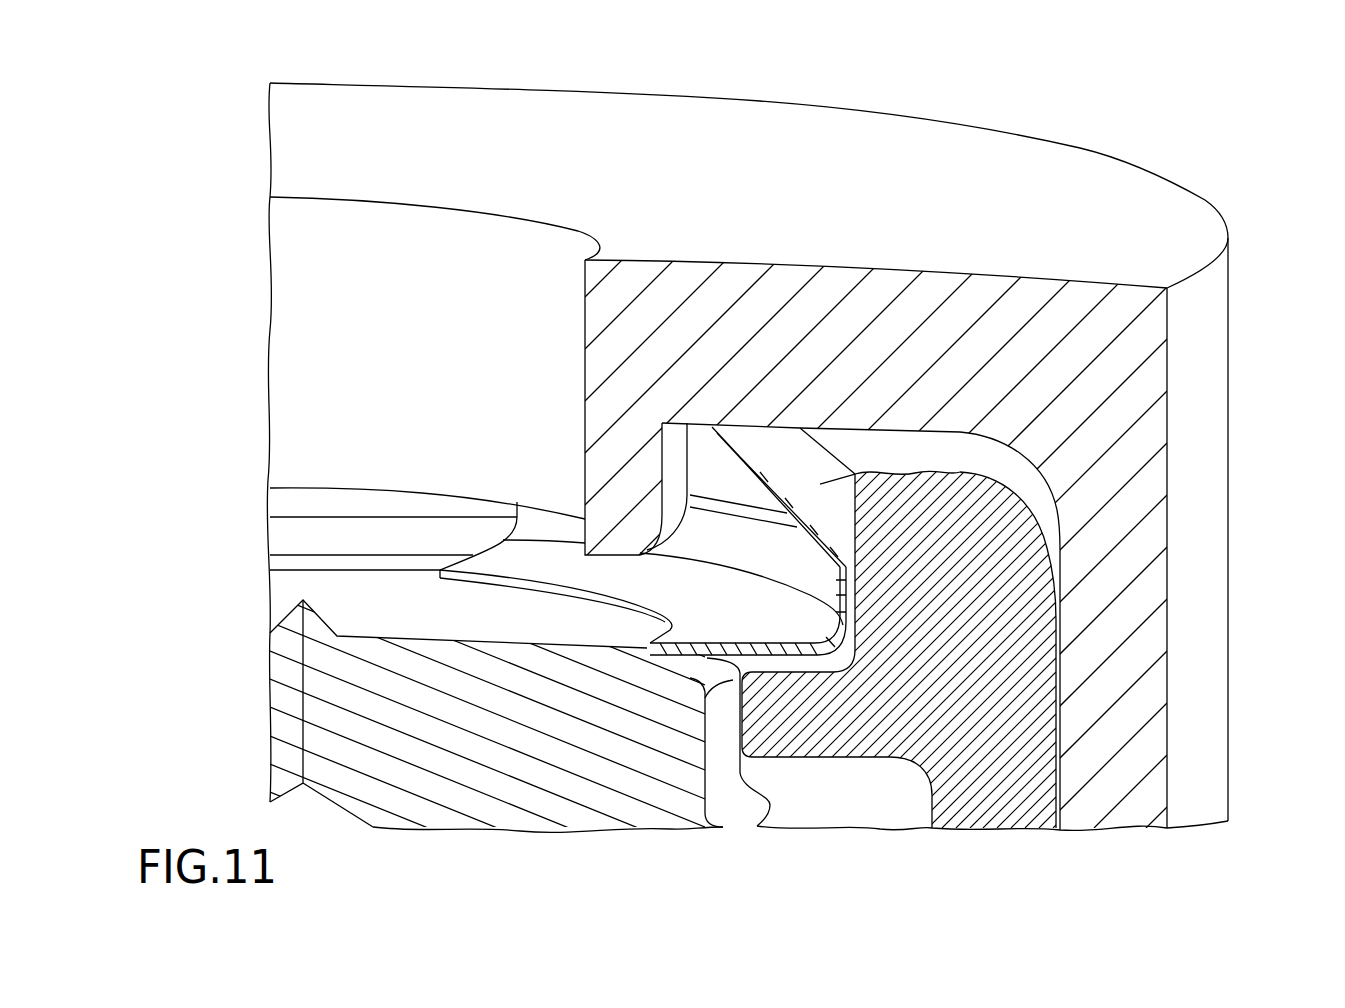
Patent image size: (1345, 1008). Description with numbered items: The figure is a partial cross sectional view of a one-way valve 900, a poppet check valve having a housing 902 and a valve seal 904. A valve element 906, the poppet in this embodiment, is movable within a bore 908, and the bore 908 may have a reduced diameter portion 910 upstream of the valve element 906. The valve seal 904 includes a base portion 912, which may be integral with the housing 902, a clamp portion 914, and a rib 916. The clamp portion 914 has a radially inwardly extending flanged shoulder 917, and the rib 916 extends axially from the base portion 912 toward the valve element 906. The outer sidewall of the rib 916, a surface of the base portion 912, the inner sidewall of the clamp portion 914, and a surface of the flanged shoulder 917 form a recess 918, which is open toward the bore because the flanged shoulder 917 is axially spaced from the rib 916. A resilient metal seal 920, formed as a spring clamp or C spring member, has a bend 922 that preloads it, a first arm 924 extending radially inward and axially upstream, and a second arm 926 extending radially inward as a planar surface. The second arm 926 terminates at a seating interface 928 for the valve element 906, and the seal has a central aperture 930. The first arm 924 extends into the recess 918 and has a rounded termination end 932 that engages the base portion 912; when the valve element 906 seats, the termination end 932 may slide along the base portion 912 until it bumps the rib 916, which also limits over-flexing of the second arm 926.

The one-way valve 900 is at (1262, 190).
The housing 902 is at (1220, 354).
The valve seal 904 is at (940, 403).
The valve element 906 is at (625, 764).
The bore 908 is at (482, 160).
The reduced diameter portion 910 is at (523, 344).
The base portion 912 is at (823, 397).
The clamp portion 914 is at (971, 591).
The rib 916 is at (636, 491).
The flanged shoulder 917 is at (820, 731).
The recess 918 is at (731, 385).
The resilient metal seal 920 is at (830, 562).
The bend 922 is at (830, 630).
The first arm 924 is at (964, 473).
The second arm 926 is at (660, 640).
The seating interface 928 is at (650, 652).
The central aperture 930 is at (494, 690).
The termination end 932 is at (717, 423).